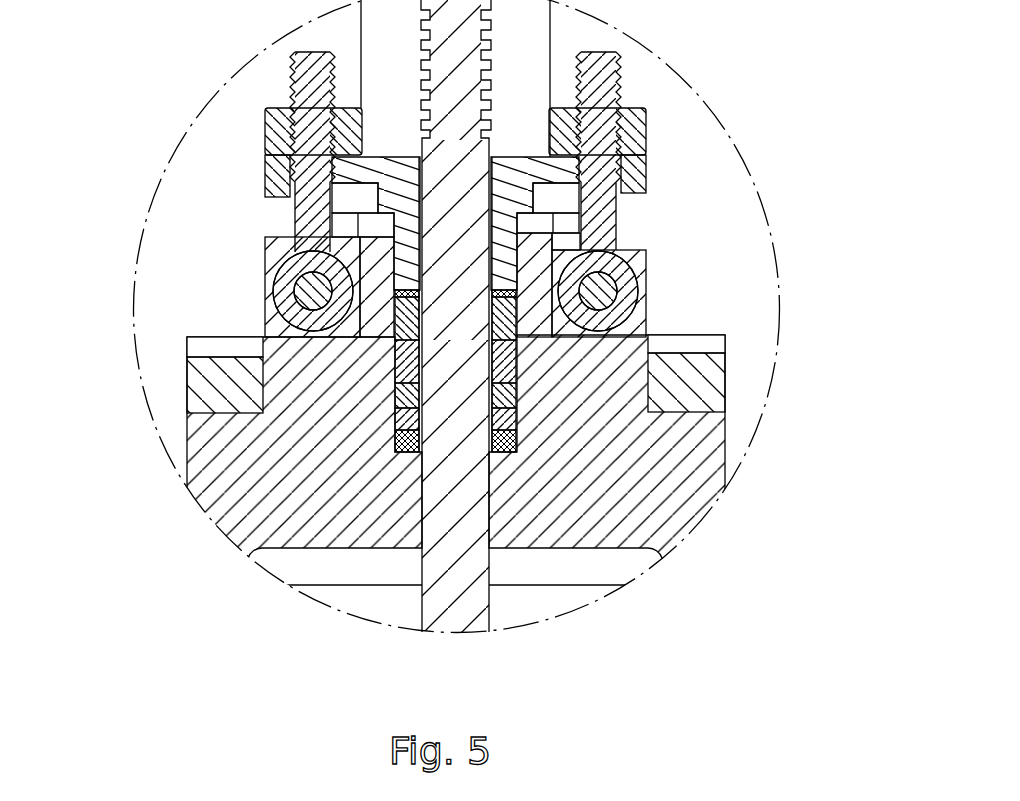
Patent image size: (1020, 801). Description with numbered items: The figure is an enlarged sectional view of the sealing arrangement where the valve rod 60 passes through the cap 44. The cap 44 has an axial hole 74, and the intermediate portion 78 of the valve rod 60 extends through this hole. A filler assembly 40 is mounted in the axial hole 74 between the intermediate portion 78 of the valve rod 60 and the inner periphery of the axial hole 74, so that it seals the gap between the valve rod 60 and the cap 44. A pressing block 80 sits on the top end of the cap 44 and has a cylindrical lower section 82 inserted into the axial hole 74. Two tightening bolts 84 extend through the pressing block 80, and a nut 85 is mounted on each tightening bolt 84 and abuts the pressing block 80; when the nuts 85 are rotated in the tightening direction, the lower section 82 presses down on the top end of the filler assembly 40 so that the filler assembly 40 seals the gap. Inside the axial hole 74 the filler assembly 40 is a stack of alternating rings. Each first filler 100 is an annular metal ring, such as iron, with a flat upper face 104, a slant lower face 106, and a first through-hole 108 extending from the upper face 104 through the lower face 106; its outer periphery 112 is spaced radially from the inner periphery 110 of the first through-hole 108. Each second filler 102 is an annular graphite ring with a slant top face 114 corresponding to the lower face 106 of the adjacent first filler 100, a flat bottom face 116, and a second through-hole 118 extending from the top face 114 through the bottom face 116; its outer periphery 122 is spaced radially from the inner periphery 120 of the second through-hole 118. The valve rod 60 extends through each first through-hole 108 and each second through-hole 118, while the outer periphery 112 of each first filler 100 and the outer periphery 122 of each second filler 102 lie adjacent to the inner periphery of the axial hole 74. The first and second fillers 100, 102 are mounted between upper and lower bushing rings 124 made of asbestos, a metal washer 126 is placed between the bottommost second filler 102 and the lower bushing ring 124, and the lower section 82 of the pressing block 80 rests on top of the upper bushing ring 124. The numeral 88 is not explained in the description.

The filler assembly 40 is at (380, 409).
The cap 44 is at (237, 509).
The valve rod 60 is at (478, 582).
The axial hole 74 is at (507, 447).
The intermediate portion 78 is at (422, 297).
The pressing block 80 is at (638, 165).
The lower section 82 is at (407, 230).
The tightening bolt 84 is at (598, 86).
The nut 85 is at (628, 123).
The support block 88 is at (202, 395).
The first filler 100 is at (400, 313).
The second filler 102 is at (400, 332).
The upper face 104 is at (508, 342).
The lower face 106 is at (513, 318).
The first through-hole 108 is at (395, 366).
The inner periphery 110 is at (413, 270).
The outer periphery 112 is at (418, 296).
The top face 114 is at (504, 293).
The bottom face 116 is at (516, 348).
The second through-hole 118 is at (517, 422).
The inner periphery 120 is at (517, 412).
The outer periphery 122 is at (517, 377).
The bushing ring 124 is at (500, 292).
The washer 126 is at (517, 433).